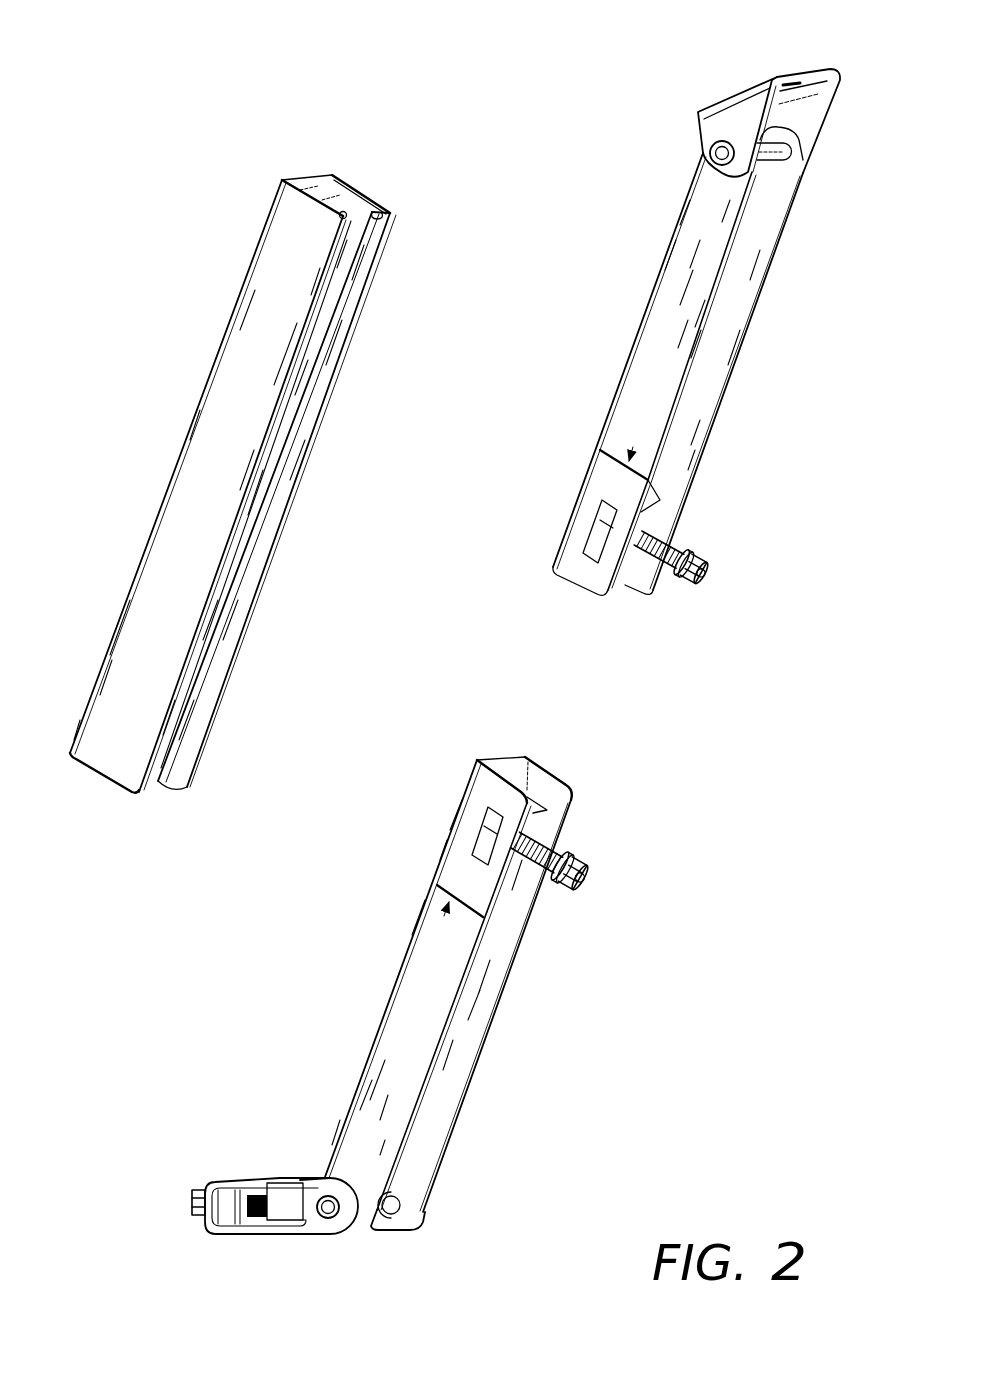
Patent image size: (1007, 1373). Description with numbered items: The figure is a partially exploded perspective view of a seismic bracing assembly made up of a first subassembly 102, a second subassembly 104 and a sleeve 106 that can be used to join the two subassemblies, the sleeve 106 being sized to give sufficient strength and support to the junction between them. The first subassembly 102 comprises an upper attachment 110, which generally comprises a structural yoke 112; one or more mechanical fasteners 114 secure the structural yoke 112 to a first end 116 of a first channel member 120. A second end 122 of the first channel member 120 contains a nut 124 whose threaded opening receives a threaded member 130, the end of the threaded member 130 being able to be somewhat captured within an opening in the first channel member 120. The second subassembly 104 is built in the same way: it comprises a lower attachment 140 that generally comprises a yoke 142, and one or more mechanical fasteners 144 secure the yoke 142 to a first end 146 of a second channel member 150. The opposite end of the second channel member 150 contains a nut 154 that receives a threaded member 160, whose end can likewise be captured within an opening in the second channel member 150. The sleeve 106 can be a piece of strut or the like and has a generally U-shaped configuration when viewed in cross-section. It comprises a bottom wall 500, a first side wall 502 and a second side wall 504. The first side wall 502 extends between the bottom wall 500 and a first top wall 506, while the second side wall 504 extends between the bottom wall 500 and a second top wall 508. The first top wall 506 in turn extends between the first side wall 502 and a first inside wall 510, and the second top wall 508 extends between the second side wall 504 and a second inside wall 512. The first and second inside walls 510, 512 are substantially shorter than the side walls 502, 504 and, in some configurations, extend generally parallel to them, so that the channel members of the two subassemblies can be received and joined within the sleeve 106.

The first subassembly 102 is at (612, 112).
The second subassembly 104 is at (485, 1148).
The sleeve 106 is at (207, 467).
The upper attachment 110 is at (778, 60).
The structural yoke 112 is at (723, 95).
The mechanical fasteners 114 is at (773, 170).
The first end 116 is at (682, 187).
The first channel member 120 is at (678, 292).
The second end 122 is at (560, 587).
The nut 124 is at (602, 518).
The threaded member 130 is at (700, 557).
The lower attachment 140 is at (218, 1243).
The yoke 142 is at (320, 1245).
The mechanical fasteners 144 is at (325, 1190).
The first end 146 is at (434, 1219).
The second channel member 150 is at (397, 1042).
The nut 154 is at (490, 822).
The threaded member 160 is at (583, 855).
The bottom wall 500 is at (311, 188).
The first side wall 502 is at (292, 246).
The second side wall 504 is at (356, 203).
The first top wall 506 is at (287, 370).
The second top wall 508 is at (343, 323).
The first inside wall 510 is at (347, 214).
The second inside wall 512 is at (388, 212).